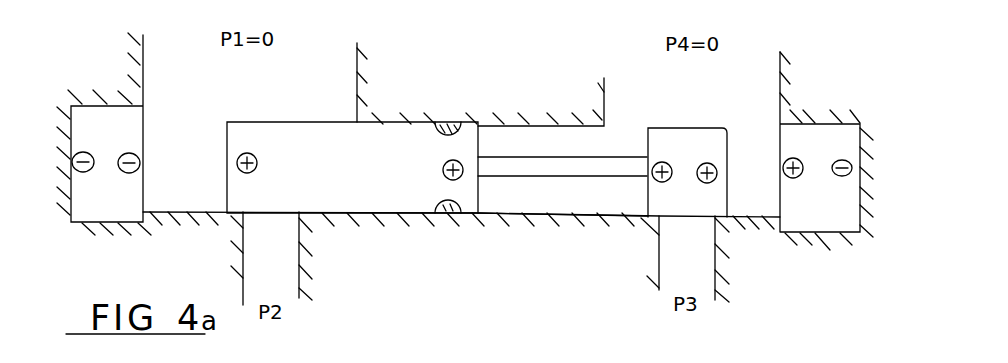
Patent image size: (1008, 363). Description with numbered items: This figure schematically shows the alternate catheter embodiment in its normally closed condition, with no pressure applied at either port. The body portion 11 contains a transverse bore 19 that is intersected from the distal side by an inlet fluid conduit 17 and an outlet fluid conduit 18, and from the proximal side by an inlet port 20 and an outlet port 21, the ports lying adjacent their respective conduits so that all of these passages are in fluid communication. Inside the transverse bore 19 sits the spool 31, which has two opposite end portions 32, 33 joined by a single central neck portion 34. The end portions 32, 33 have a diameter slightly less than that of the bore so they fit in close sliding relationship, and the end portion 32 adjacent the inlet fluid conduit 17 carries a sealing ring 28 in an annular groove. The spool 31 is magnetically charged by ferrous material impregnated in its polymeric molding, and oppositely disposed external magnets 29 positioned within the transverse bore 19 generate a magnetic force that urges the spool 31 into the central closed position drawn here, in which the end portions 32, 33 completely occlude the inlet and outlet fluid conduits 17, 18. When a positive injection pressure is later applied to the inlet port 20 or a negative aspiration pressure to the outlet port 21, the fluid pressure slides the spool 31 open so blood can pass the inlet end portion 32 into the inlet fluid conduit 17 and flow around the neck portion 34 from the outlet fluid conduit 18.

The body portion 11 is at (497, 289).
The inlet fluid conduit 17 is at (278, 282).
The outlet fluid conduit 18 is at (668, 263).
The transverse bore 19 is at (562, 200).
The inlet port 20 is at (345, 63).
The outlet port 21 is at (613, 68).
The sealing ring 28 is at (452, 117).
The external magnets 29 is at (85, 206).
The spool 31 is at (363, 137).
The end portion 32 is at (393, 140).
The end portion 33 is at (665, 137).
The neck portion 34 is at (543, 158).